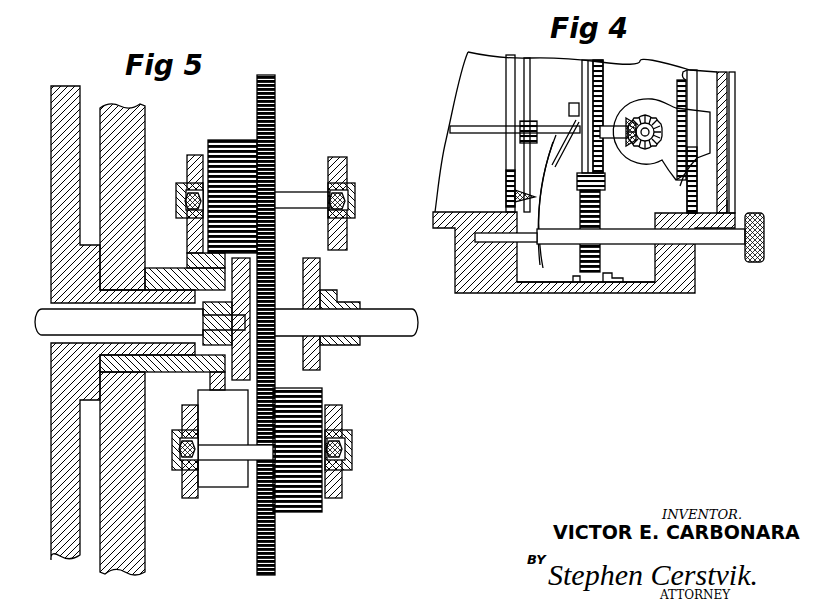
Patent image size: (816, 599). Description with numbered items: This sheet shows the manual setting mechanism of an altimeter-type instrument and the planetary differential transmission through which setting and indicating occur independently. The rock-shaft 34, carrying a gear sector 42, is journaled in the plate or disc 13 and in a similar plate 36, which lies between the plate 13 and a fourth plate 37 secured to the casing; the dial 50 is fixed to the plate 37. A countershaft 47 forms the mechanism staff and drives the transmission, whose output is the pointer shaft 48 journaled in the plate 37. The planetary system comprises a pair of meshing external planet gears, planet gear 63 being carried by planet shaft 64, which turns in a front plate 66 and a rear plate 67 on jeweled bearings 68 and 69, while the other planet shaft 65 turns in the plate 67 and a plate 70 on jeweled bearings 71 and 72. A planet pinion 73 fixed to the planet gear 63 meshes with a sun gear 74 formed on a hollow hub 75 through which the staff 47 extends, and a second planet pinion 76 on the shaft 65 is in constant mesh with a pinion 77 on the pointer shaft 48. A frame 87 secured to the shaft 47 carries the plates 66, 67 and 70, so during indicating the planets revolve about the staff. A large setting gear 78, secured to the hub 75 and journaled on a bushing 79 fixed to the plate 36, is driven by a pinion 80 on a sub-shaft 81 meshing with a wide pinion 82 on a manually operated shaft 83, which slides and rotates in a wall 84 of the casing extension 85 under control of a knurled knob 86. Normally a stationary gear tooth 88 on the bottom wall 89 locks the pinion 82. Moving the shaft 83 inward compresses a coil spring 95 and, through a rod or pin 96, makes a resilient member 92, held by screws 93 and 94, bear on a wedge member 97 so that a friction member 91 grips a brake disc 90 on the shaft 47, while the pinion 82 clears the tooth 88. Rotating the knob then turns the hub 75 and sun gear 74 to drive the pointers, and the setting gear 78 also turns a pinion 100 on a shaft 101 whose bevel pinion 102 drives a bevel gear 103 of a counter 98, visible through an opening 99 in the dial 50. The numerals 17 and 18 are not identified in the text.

In FIG. 4, the plate or disc 13 is at (506, 164).
In FIG. 4, the side plate 17 is at (735, 122).
In FIG. 4, the plate lower portion 18 is at (733, 205).
In FIG. 4, the rock-shaft 34 is at (468, 127).
In FIG. 5, the plate 36 is at (51, 152).
In FIG. 4, the plate 36 is at (556, 201).
In FIG. 4, the plate or disc 37 is at (684, 72).
In FIG. 4, the gear sector 42 is at (530, 95).
In FIG. 5, the countershaft (mechanism staff) 47 is at (42, 320).
In FIG. 5, the pointer shaft 48 is at (406, 337).
In FIG. 4, the dial 50 is at (702, 73).
In FIG. 5, the planet gear 63 is at (275, 108).
In FIG. 5, the planet shaft 64 is at (309, 193).
In FIG. 5, the planet shaft 65 is at (226, 462).
In FIG. 5, the front plate 66 is at (347, 170).
In FIG. 5, the rear plate 67 is at (187, 175).
In FIG. 5, the jeweled bearing 68 is at (356, 200).
In FIG. 5, the jeweled bearing 69 is at (186, 208).
In FIG. 5, the plate 70 is at (342, 488).
In FIG. 5, the jeweled bearing 71 is at (180, 452).
In FIG. 5, the jeweled bearing 72 is at (352, 450).
In FIG. 5, the planet pinion 73 is at (245, 140).
In FIG. 5, the sun gear 74 is at (208, 392).
In FIG. 5, the hollow hub 75 is at (158, 378).
In FIG. 5, the planet pinion 76 is at (308, 513).
In FIG. 5, the pinion 77 is at (320, 272).
In FIG. 5, the large gear (setting gear) 78 is at (140, 130).
In FIG. 4, the large gear (setting gear) 78 is at (600, 82).
In FIG. 5, the cannon or bushing 79 is at (80, 405).
In FIG. 4, the pinion 80 is at (627, 142).
In FIG. 4, the sub-shaft 81 is at (605, 176).
In FIG. 4, the wide pinion 82 is at (602, 205).
In FIG. 4, the manually operated shaft 83 is at (620, 230).
In FIG. 4, the wall 84 is at (696, 280).
In FIG. 4, the enlarged portion or extension 85 is at (696, 292).
In FIG. 4, the knurled knob 86 is at (760, 258).
In FIG. 5, the frame 87 is at (250, 272).
In FIG. 4, the stationary gear tooth 88 is at (613, 284).
In FIG. 4, the bottom wall 89 is at (525, 284).
In FIG. 4, the brake disc 90 is at (583, 78).
In FIG. 4, the brake or friction member 91 is at (569, 112).
In FIG. 4, the resilient member 92 is at (540, 216).
In FIG. 4, the screw 93 is at (574, 278).
In FIG. 4, the screw 94 is at (622, 275).
In FIG. 4, the coil spring 95 is at (492, 230).
In FIG. 4, the rod or pin 96 is at (532, 243).
In FIG. 4, the wedge member 97 is at (522, 190).
In FIG. 4, the counter 98 is at (645, 103).
In FIG. 4, the opening 99 is at (692, 113).
In FIG. 4, the pinion 100 is at (612, 126).
In FIG. 4, the shaft 101 is at (637, 115).
In FIG. 4, the bevel pinion 102 is at (630, 152).
In FIG. 4, the bevel gear 103 is at (680, 170).